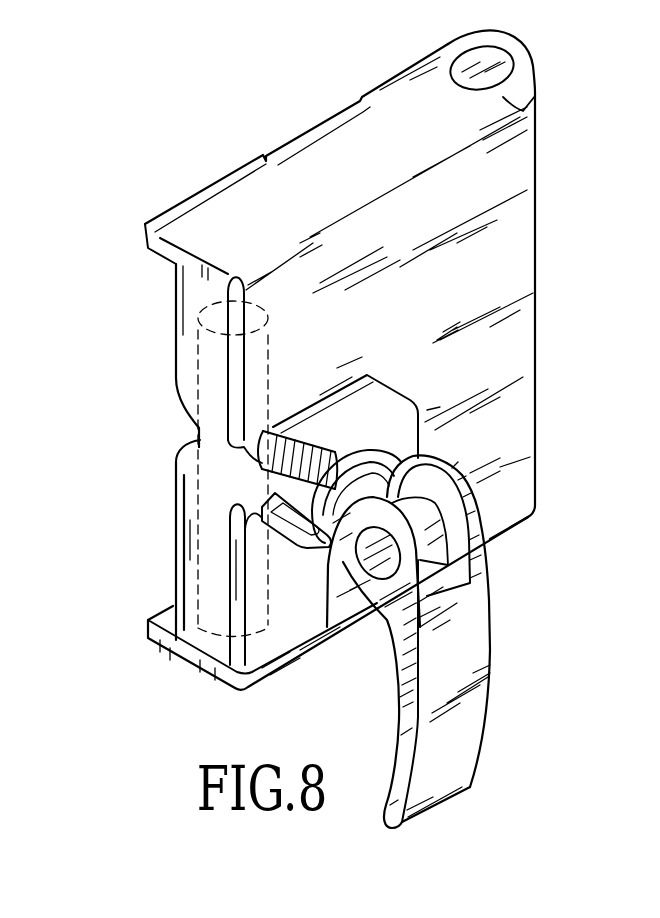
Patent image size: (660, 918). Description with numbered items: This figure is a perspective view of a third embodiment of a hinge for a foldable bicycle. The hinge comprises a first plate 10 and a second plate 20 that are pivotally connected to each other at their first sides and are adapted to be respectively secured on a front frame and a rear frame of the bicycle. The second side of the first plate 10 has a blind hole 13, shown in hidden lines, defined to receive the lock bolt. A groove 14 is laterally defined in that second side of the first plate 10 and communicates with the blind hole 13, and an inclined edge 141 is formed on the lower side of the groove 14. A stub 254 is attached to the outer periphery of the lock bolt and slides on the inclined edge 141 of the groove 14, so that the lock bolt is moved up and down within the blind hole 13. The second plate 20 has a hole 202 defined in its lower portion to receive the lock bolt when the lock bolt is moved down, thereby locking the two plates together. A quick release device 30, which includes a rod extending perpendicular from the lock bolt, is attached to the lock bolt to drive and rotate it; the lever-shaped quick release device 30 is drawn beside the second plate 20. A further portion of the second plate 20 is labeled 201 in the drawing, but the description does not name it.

The first plate 10 is at (325, 130).
The blind hole 13 is at (197, 338).
The groove 14 is at (190, 420).
The inclined edge 141 is at (200, 438).
The second plate 20 is at (588, 266).
The slotted tab of plate 201 is at (332, 667).
The hole 202 is at (275, 700).
The stub 254 is at (273, 483).
The quick release device 30 is at (632, 641).